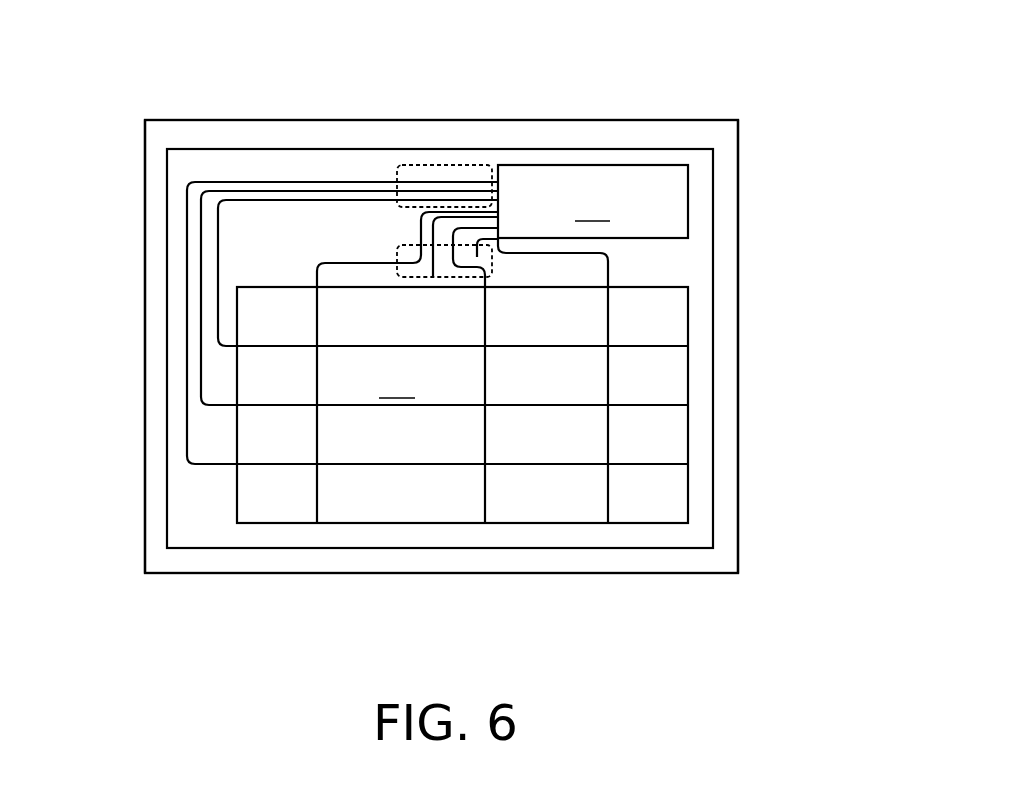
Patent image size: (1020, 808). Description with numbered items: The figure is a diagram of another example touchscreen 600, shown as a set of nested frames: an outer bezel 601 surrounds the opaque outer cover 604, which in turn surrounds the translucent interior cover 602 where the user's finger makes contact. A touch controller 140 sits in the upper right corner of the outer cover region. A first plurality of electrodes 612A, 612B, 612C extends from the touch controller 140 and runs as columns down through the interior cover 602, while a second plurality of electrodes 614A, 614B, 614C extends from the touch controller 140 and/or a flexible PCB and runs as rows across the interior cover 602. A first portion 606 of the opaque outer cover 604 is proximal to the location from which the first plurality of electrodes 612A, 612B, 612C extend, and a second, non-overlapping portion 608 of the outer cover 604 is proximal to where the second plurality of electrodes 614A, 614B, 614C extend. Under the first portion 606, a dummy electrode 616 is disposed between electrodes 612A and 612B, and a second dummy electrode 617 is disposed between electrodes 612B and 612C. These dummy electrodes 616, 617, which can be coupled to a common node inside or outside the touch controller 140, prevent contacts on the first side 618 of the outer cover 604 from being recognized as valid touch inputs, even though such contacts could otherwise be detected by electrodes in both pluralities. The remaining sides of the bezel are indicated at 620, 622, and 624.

The touchscreen 600 is at (306, 92).
The bezel 601 is at (738, 457).
The translucent interior cover portion 602 is at (688, 307).
The opaque outer cover 604 is at (691, 149).
The first portion of the opaque outer cover 606 is at (397, 247).
The second portion of the opaque outer cover 608 is at (432, 165).
The electrode of first plurality of electrodes 612A is at (317, 424).
The electrode of first plurality of electrodes 612B is at (487, 364).
The electrode of first plurality of electrodes 612C is at (610, 375).
The electrode of second plurality of electrodes 614A is at (457, 346).
The electrode of second plurality of electrodes 614B is at (353, 407).
The electrode of second plurality of electrodes 614C is at (352, 465).
The dummy electrode 616 is at (433, 272).
The second dummy electrode 617 is at (477, 257).
The first side of the outer cover 618 is at (525, 110).
The bottom edge of bezel 620 is at (573, 584).
The left edge of bezel 622 is at (136, 449).
The right edge of bezel 624 is at (748, 220).
The touch controller 140 is at (593, 201).